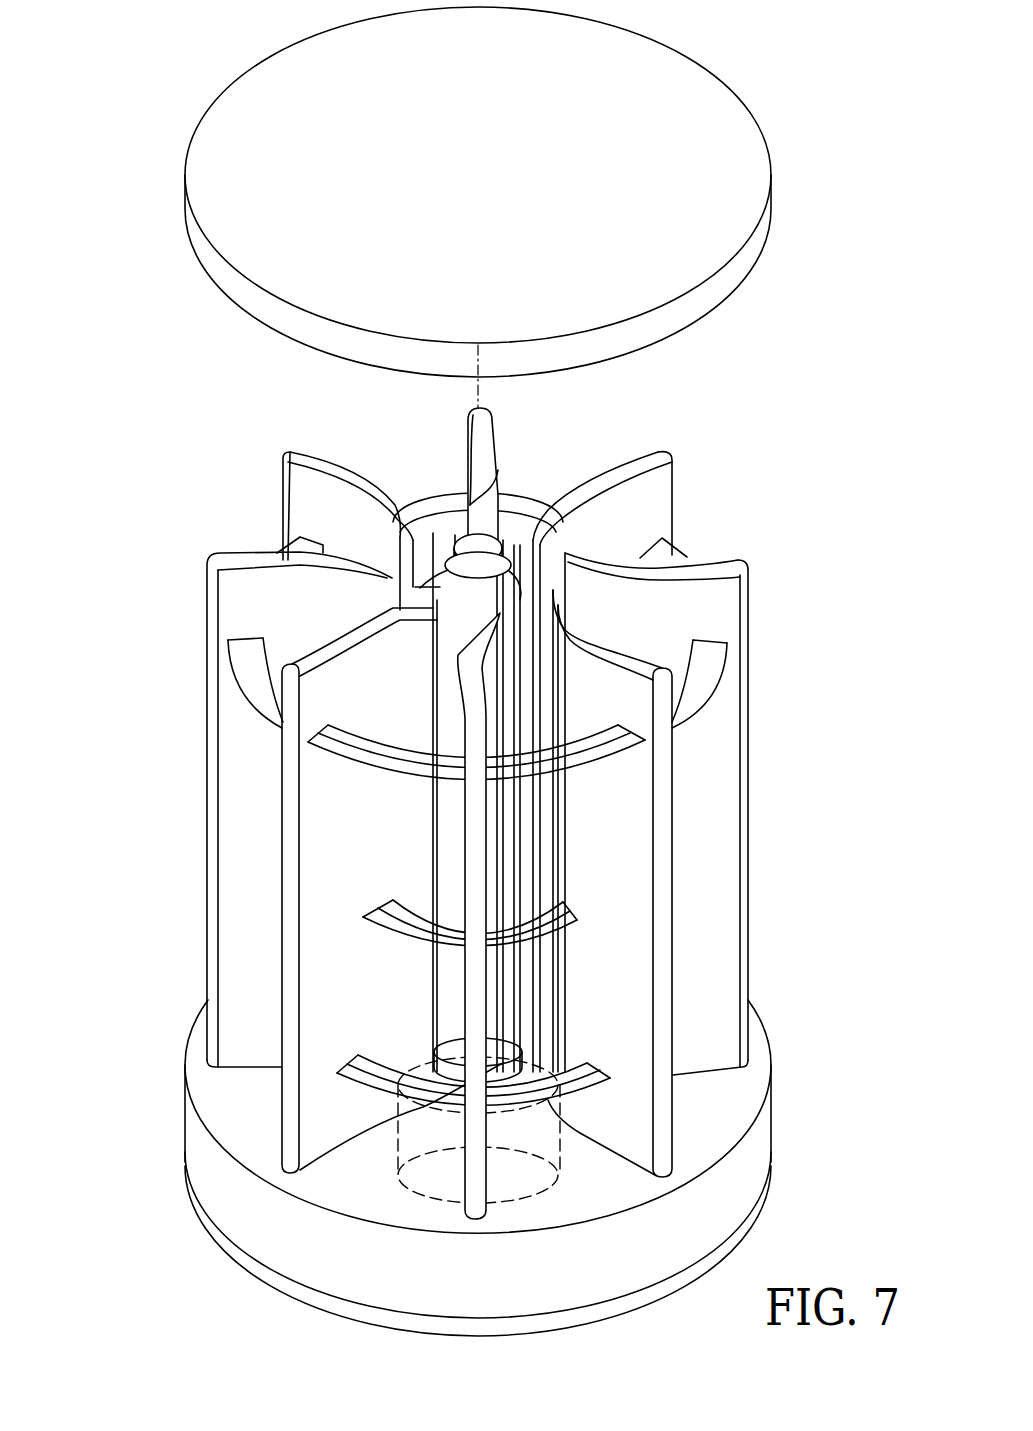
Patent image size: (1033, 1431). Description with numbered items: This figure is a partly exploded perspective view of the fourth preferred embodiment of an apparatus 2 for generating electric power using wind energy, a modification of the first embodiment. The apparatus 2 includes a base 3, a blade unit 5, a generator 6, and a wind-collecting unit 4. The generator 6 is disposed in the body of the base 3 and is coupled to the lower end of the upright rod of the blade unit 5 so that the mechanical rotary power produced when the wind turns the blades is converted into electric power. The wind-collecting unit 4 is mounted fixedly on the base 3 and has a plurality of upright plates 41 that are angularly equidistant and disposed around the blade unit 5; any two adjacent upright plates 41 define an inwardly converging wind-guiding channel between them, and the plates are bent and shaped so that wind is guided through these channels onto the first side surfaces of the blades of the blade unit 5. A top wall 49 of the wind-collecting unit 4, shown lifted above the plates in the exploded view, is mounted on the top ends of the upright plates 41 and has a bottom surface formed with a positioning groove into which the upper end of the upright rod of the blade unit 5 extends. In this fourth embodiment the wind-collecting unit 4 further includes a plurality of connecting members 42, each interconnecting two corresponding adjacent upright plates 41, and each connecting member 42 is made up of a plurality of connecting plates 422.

The apparatus for generating electric power using wind energy 2 is at (421, 188).
The top wall 49 is at (292, 60).
The base 3 is at (186, 1145).
The wind-collecting unit 4 is at (224, 549).
The upright plate 41 is at (313, 462).
The connecting member 42 is at (491, 871).
The connecting plate 422 is at (528, 871).
The blade unit 5 is at (505, 530).
The generator 6 is at (503, 1187).